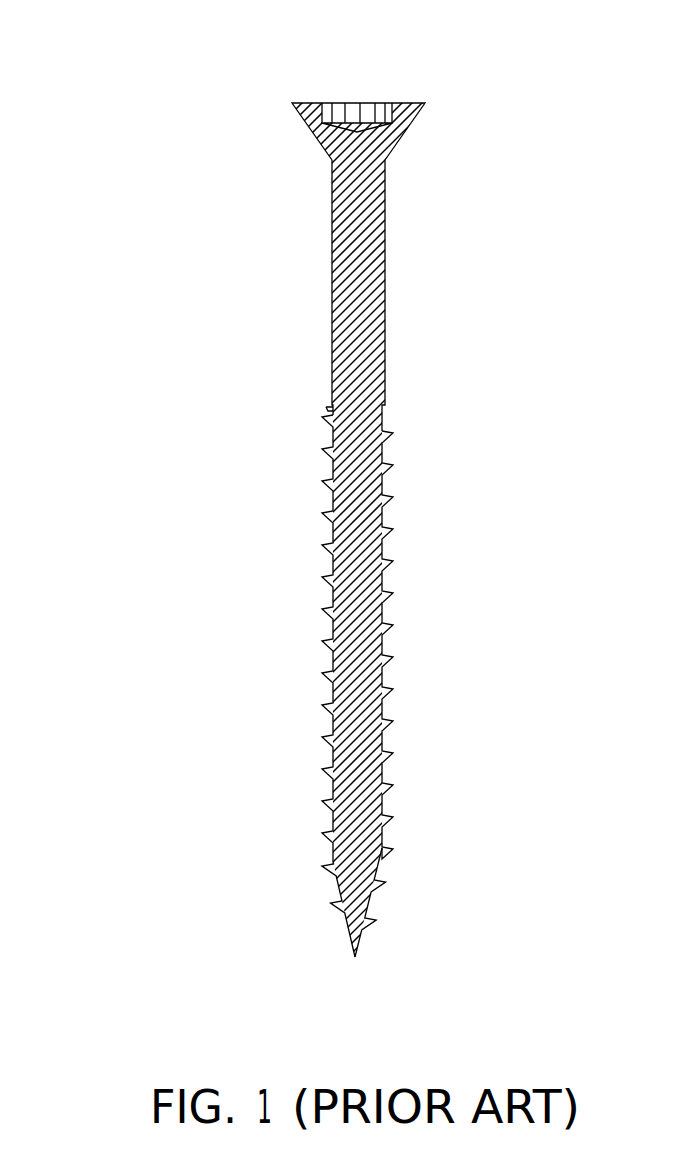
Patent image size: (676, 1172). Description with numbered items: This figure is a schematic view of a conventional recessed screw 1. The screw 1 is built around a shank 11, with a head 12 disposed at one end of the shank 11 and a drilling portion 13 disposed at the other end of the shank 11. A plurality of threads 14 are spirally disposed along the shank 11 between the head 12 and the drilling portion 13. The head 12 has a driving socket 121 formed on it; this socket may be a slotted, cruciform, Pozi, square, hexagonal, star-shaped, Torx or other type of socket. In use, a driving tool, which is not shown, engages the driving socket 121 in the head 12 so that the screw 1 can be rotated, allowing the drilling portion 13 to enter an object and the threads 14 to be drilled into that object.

The screw 1 is at (165, 132).
The shank 11 is at (383, 347).
The head 12 is at (432, 102).
The driving socket 121 is at (356, 108).
The drilling portion 13 is at (348, 940).
The threads 14 is at (330, 578).